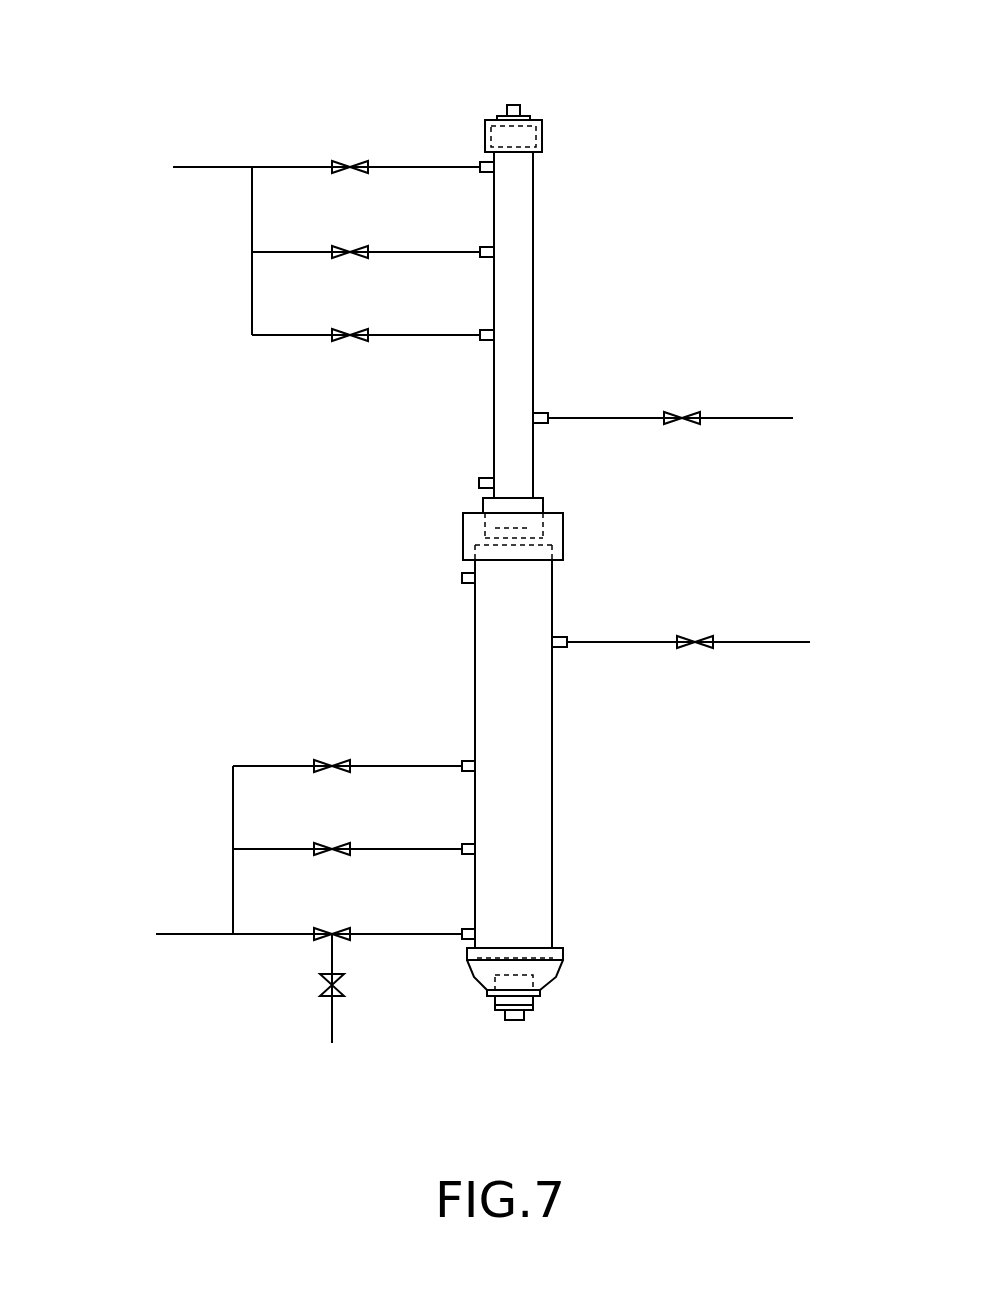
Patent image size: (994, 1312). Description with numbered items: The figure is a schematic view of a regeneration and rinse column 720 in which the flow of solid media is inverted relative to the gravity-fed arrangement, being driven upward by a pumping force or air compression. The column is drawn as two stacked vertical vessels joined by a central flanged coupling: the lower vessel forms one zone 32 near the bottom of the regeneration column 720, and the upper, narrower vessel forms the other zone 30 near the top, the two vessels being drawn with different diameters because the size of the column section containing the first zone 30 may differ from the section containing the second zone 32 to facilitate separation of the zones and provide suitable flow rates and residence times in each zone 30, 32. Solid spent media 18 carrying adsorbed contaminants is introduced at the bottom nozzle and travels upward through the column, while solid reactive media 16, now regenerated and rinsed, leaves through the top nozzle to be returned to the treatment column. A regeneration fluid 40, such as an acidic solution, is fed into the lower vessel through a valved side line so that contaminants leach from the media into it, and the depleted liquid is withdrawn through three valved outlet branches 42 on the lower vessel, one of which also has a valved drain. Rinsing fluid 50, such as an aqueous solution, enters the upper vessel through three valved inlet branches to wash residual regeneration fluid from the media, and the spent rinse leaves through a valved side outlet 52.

The solid reactive media 16 is at (515, 88).
The solid spent media 18 is at (514, 1038).
The first zone 30 is at (523, 722).
The second zone 32 is at (523, 371).
The regeneration fluid 40 is at (852, 642).
The bottoms outlet stream 42 is at (50, 934).
The rinsing fluid 50 is at (138, 167).
The side draw outlet stream 52 is at (880, 418).
The regeneration column 720 is at (608, 239).